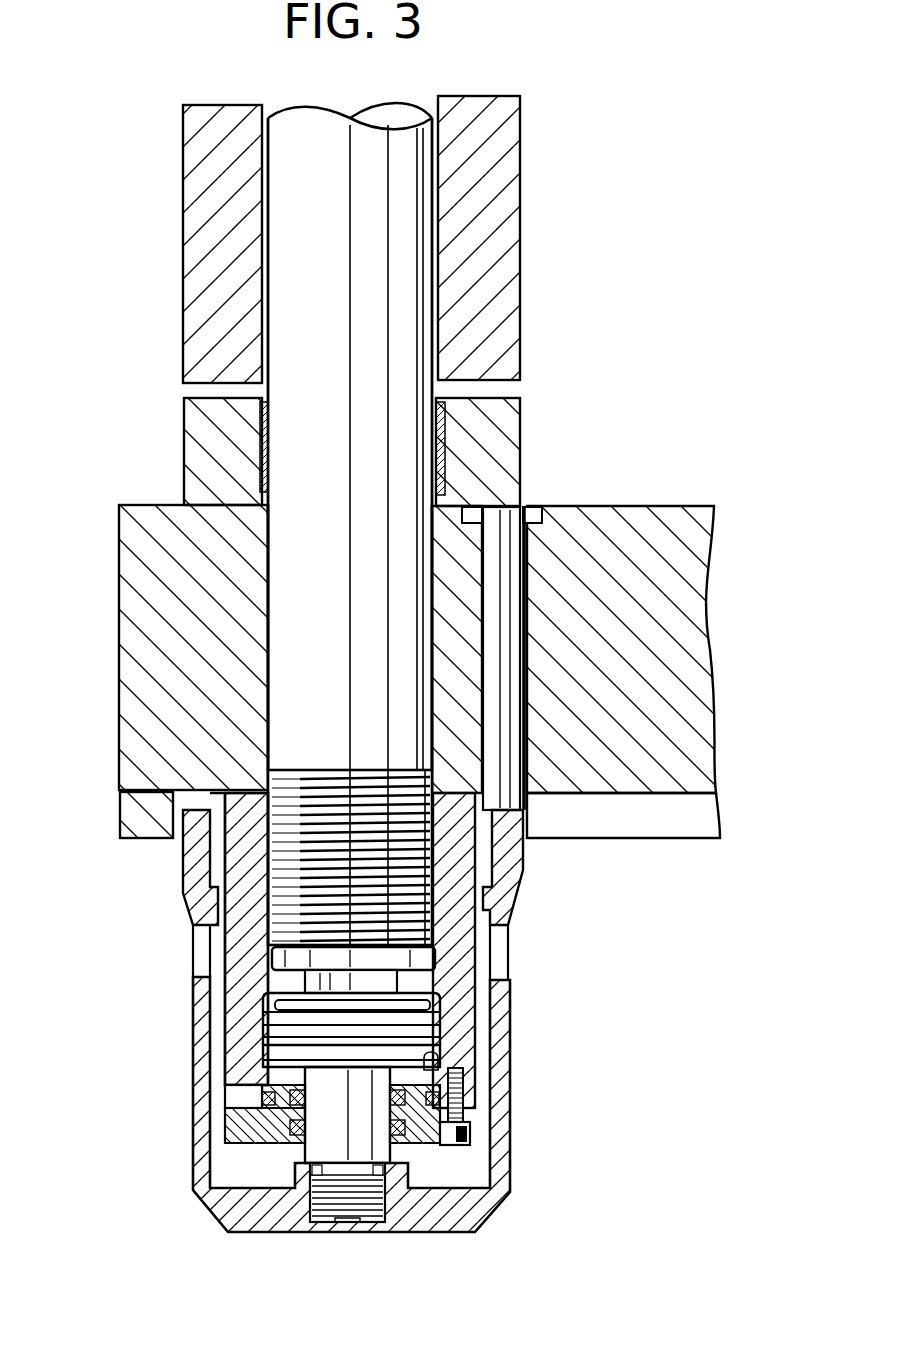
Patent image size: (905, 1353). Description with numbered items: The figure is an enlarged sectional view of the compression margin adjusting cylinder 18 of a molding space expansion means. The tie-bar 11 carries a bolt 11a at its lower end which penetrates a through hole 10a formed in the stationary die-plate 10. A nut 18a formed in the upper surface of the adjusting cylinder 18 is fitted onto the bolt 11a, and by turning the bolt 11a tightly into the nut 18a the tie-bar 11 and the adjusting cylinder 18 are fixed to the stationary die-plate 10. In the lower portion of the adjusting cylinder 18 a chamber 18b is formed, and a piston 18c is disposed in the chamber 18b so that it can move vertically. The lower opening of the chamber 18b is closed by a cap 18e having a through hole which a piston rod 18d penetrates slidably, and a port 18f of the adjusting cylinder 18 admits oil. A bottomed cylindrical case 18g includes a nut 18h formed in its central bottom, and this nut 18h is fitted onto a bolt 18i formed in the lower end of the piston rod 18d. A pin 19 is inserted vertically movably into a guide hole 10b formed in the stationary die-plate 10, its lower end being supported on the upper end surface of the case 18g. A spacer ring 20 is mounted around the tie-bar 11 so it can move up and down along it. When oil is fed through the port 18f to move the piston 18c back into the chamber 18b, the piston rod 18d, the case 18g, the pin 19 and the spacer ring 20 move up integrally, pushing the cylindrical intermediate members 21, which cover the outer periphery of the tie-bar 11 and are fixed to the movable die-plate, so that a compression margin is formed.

The stationary die-plate 10 is at (128, 730).
The through hole 10a is at (275, 570).
The guide hole 10b is at (528, 577).
The tie-bar 11 is at (280, 645).
The bolt 11a is at (280, 848).
The compression margin adjusting cylinder 18 is at (522, 866).
The nut 18a is at (275, 930).
The chamber 18b is at (430, 1052).
The piston 18c is at (428, 1035).
The piston rod 18d is at (395, 1155).
The cap 18e is at (252, 1135).
The port 18f is at (232, 1083).
The case 18g is at (497, 1118).
The nut 18h is at (318, 1200).
The bolt 18i is at (352, 1222).
The pin 19 is at (512, 622).
The spacer ring 20 is at (500, 461).
The cylindrical intermediate member 21 is at (188, 181).